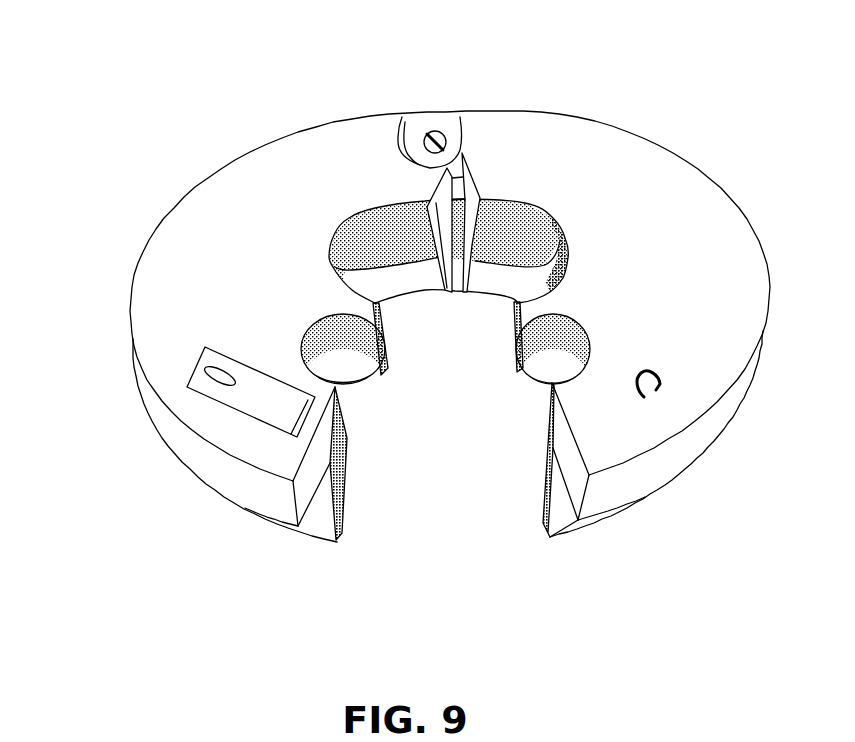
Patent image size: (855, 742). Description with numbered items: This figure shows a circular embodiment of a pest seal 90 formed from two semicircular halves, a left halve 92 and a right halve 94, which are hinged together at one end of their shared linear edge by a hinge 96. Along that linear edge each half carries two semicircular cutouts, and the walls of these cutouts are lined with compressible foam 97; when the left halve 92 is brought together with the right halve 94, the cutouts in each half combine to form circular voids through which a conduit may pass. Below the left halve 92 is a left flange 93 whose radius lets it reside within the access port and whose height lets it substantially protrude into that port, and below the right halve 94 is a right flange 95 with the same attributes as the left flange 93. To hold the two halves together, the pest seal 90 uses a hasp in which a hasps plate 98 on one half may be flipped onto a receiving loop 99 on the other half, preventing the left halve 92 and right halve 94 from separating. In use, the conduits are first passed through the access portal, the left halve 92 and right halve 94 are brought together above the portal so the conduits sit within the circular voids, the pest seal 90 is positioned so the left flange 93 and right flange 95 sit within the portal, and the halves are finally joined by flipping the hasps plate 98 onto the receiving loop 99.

The pest seal 90 is at (118, 93).
The left halve 92 is at (135, 350).
The left flange 93 is at (347, 507).
The right halve 94 is at (683, 155).
The right flange 95 is at (537, 498).
The hinge 96 is at (447, 127).
The compressible foam 97 is at (386, 251).
The hasps plate 98 is at (227, 408).
The receiving loop 99 is at (657, 393).